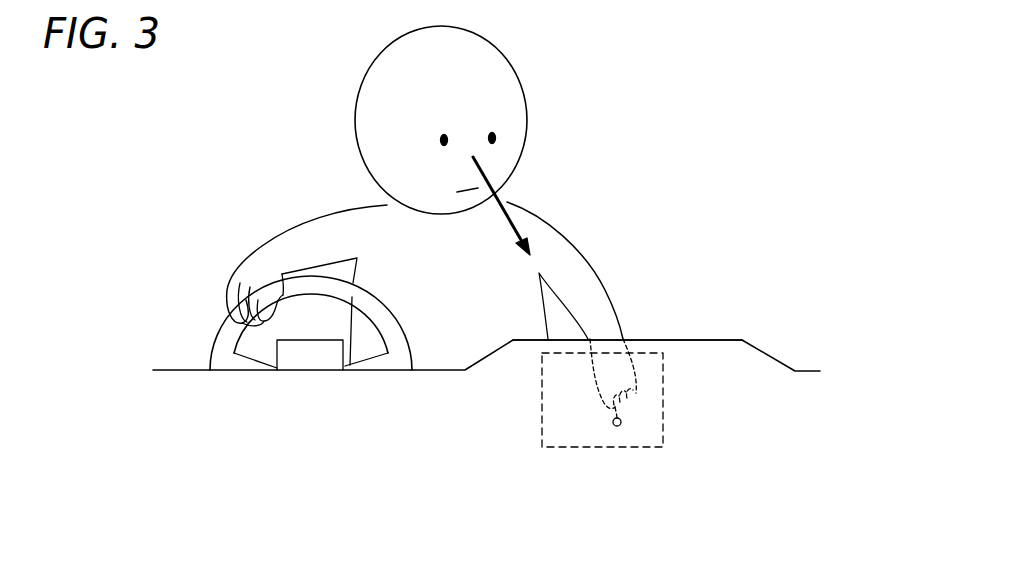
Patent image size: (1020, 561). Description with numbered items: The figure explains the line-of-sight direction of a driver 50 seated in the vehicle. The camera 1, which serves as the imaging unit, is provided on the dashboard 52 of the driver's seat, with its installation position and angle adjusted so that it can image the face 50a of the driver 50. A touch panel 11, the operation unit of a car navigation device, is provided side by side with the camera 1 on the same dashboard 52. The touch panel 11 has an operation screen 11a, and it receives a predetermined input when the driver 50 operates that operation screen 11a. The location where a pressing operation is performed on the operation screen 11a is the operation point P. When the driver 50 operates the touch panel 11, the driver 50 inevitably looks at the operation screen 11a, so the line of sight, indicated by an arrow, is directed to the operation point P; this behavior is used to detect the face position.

The camera 1 is at (312, 355).
The touch panel 11 is at (543, 412).
The operation screen 11a is at (585, 422).
The driver 50 is at (557, 115).
The face 50a is at (363, 117).
The dashboard 52 is at (702, 339).
The operation point P is at (623, 422).